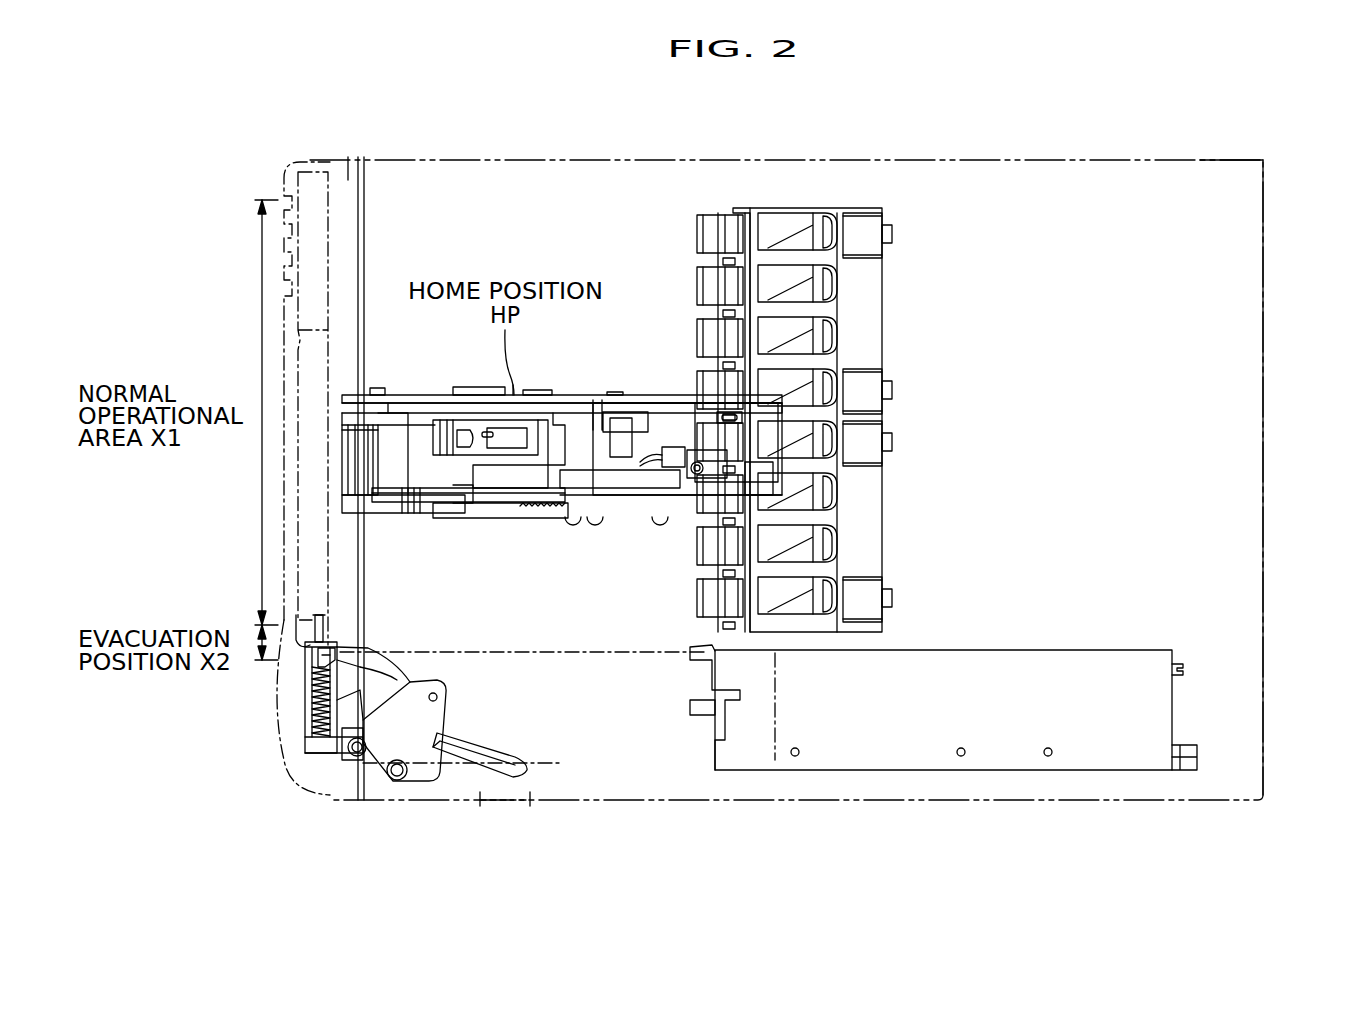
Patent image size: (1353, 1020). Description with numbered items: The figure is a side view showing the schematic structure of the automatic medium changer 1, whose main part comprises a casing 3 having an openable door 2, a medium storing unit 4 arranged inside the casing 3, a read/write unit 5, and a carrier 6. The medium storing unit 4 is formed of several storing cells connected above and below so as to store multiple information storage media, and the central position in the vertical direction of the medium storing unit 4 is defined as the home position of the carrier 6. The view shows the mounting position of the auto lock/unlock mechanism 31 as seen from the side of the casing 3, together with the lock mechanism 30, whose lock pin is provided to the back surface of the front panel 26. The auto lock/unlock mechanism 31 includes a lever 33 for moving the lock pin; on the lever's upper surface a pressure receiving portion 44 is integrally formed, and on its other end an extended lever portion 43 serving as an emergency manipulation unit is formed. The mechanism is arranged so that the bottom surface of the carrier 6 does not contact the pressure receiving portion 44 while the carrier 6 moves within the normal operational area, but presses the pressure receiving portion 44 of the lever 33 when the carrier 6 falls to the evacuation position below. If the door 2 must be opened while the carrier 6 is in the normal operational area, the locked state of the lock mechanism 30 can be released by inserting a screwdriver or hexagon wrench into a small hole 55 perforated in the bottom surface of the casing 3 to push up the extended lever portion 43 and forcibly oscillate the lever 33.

The automatic medium changer 1 is at (1043, 160).
The door 2 is at (246, 185).
The casing 3 is at (731, 160).
The medium storing unit 4 is at (920, 327).
The read/write unit 5 is at (1023, 622).
The carrier 6 is at (541, 528).
The front panel 26 is at (350, 157).
The lock mechanism 30 is at (435, 805).
The auto lock/unlock mechanism 31 is at (329, 687).
The lever 33 is at (420, 669).
The extended lever portion 43 is at (497, 763).
The pressure receiving portion 44 is at (393, 667).
The small hole 55 is at (505, 802).